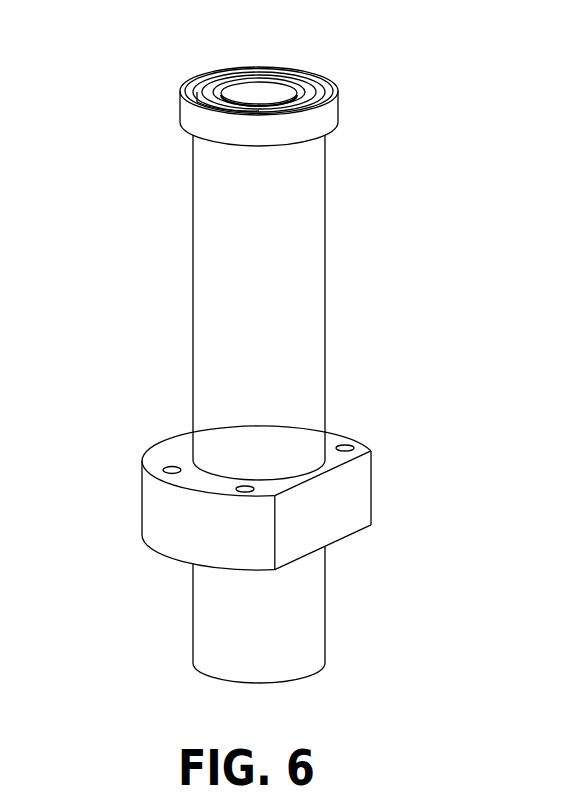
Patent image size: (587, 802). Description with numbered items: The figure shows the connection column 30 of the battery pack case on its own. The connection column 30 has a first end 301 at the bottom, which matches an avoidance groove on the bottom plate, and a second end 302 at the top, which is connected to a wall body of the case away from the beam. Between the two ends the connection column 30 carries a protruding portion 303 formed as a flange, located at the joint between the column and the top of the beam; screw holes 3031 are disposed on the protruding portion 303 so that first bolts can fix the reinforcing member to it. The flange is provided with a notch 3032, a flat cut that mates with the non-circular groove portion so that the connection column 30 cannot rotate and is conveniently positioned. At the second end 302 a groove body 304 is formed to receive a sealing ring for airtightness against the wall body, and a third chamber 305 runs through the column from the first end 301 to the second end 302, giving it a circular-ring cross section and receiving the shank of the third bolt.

The connection column 30 is at (363, 293).
The first end 301 is at (317, 672).
The second end 302 is at (335, 93).
The protruding portion 303 is at (267, 489).
The screw holes 3031 is at (165, 472).
The notch 3032 is at (353, 501).
The groove body 304 is at (198, 95).
The third chamber 305 is at (260, 95).